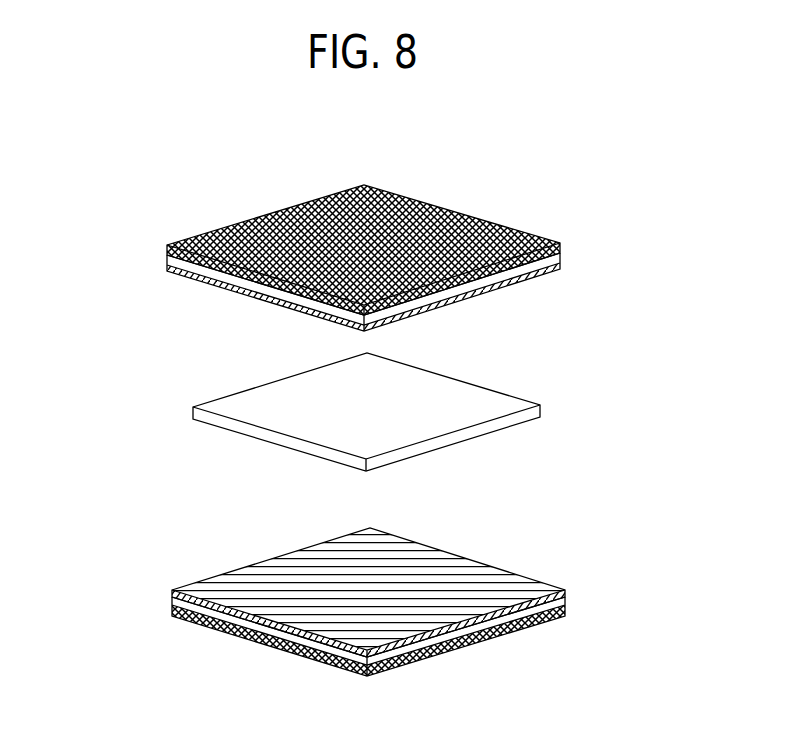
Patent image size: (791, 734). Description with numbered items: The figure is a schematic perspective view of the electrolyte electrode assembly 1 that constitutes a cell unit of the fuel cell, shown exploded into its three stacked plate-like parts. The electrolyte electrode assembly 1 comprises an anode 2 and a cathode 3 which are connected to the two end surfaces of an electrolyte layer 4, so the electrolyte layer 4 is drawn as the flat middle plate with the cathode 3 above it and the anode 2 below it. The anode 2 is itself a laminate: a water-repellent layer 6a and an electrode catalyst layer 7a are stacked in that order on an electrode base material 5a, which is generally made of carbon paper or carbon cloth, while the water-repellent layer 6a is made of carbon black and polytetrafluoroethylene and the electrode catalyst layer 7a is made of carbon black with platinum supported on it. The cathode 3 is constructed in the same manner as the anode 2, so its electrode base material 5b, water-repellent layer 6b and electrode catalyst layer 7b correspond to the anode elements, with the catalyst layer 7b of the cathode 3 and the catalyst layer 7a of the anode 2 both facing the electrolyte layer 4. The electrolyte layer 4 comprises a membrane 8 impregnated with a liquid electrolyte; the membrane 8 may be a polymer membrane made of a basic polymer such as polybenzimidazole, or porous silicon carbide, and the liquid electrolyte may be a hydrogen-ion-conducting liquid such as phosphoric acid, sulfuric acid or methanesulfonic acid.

The electrolyte electrode assembly 1 is at (683, 127).
The anode 2 is at (215, 572).
The cathode 3 is at (197, 230).
The electrolyte layer 4 is at (215, 405).
The electrode base material 5a is at (540, 624).
The electrode base material 5b is at (520, 236).
The water-repellent layer 6a is at (555, 599).
The water-repellent layer 6b is at (542, 257).
The electrode catalyst layer 7a is at (533, 586).
The electrode catalyst layer 7b is at (518, 285).
The membrane 8 is at (508, 407).